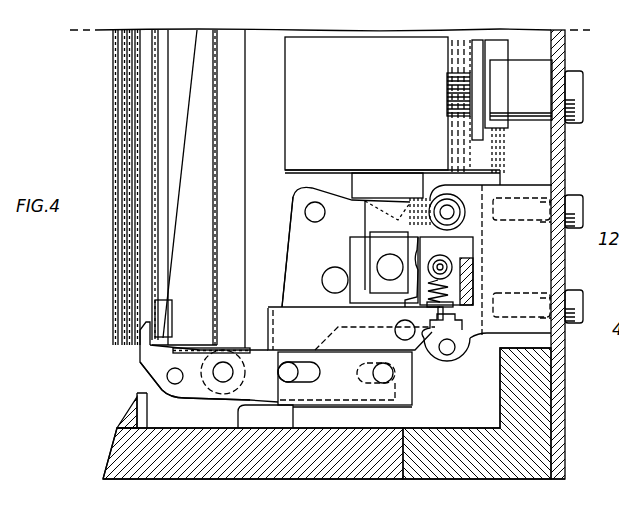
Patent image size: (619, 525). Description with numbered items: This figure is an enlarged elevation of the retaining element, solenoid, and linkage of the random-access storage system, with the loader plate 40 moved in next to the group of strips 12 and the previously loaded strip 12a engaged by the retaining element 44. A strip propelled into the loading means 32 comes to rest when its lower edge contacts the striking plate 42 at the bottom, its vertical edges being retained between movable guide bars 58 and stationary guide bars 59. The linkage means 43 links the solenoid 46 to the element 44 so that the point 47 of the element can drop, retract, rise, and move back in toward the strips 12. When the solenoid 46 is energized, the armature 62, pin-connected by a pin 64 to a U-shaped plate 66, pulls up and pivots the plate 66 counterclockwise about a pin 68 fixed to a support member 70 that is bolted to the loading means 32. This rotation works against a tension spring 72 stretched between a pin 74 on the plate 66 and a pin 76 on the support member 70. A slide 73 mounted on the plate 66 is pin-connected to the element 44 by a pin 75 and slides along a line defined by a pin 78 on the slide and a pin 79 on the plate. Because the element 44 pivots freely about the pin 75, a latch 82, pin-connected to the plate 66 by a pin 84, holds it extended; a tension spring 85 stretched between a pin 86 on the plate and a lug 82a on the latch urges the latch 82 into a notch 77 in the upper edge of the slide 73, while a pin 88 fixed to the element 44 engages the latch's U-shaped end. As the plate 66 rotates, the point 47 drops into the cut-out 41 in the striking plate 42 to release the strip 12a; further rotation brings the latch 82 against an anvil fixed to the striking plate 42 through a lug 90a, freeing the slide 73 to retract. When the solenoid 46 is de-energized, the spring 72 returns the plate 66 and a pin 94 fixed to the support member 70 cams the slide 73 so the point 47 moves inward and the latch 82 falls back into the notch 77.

The group of strips 12 is at (110, 245).
The previously loaded strip 12a is at (166, 306).
The loading means 32 is at (570, 152).
The loader plate 40 is at (172, 250).
The cut-out 41 is at (136, 410).
The striking plate 42 is at (147, 385).
The linkage means 43 is at (487, 248).
The retaining element 44 is at (140, 367).
The solenoid 46 is at (285, 108).
The point 47 is at (140, 332).
The movable guide bars 58 is at (206, 44).
The stationary guide bars 59 is at (240, 50).
The armature 62 is at (345, 195).
The pin 64 is at (378, 265).
The plate 66 is at (284, 252).
The pin 68 is at (328, 270).
The support member 70 is at (503, 193).
The tension spring 72 is at (408, 212).
The slide 73 is at (256, 398).
The pin 74 is at (305, 213).
The pin 75 is at (234, 372).
The pin 76 is at (458, 222).
The notch 77 is at (275, 338).
The pin 78 is at (310, 374).
The pin 79 is at (393, 377).
The latch 82 is at (277, 305).
The lug 82a is at (467, 350).
The pin 84 is at (396, 333).
The tension spring 85 is at (465, 290).
The pin 86 is at (448, 268).
The pin 88 is at (165, 381).
The lug 90a is at (300, 420).
The pin 94 is at (449, 353).